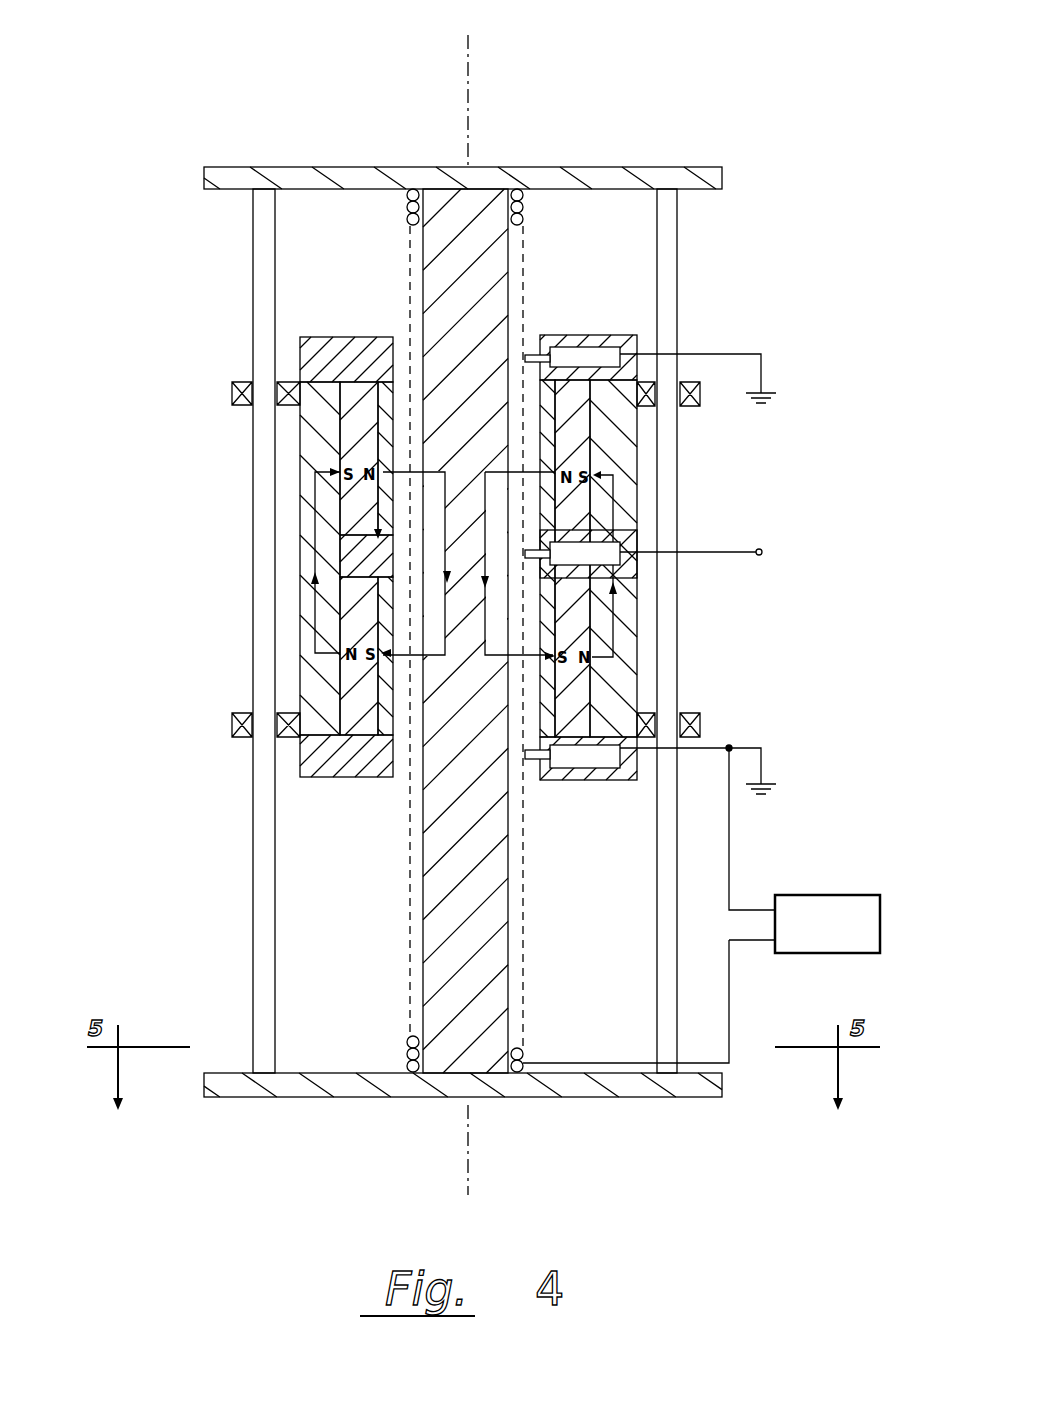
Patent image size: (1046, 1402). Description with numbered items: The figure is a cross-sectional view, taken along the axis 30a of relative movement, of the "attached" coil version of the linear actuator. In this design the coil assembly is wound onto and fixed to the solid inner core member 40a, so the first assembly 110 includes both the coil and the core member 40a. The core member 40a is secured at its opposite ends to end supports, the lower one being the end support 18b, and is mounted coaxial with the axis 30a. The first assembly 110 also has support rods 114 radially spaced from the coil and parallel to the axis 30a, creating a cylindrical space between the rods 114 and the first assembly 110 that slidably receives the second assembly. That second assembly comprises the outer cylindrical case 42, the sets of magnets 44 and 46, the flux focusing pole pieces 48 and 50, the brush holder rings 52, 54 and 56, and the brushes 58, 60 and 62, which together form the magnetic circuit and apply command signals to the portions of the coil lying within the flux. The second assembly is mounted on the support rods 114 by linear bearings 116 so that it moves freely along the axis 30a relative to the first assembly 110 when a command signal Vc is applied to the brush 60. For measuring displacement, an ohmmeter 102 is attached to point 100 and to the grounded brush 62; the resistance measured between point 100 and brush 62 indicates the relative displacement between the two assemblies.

The axis 30a is at (468, 90).
The inner core member 40a is at (448, 210).
The first assembly 110 is at (646, 168).
The end support 18b is at (463, 1101).
The support rods 114 is at (254, 832).
The linear bearings 116 is at (242, 382).
The brush holder ring 52 is at (333, 340).
The brush holder ring 56 is at (340, 770).
The outer cylindrical case 42 is at (305, 533).
The magnet assembly 44 is at (348, 488).
The magnet assembly 46 is at (353, 607).
The flux focusing pole piece 48 is at (383, 442).
The flux focusing pole piece 50 is at (350, 680).
The brush holder ring 54 is at (353, 555).
The brush 58 is at (592, 352).
The brush 60 is at (603, 548).
The grounded brush 62 is at (593, 757).
The point 100 is at (520, 1063).
The ohmmeter 102 is at (842, 895).